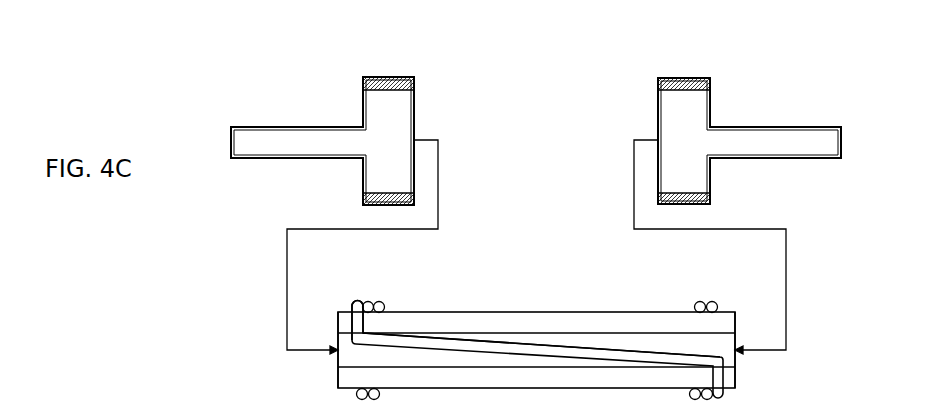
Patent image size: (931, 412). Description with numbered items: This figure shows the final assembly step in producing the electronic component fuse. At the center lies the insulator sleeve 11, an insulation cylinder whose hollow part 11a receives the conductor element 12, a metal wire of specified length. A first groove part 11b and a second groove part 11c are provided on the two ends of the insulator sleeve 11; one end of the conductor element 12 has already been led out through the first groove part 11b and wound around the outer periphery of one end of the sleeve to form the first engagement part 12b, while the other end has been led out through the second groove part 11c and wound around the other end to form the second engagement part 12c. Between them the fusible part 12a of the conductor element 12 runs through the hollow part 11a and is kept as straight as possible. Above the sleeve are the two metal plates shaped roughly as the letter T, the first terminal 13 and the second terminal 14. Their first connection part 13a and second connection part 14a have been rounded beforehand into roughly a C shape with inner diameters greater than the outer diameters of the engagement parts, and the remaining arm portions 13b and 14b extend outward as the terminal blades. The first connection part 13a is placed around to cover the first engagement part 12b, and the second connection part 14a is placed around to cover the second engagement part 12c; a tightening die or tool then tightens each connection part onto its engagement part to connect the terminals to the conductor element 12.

The insulator sleeve 11 is at (551, 325).
The hollow part 11a is at (506, 340).
The first groove part 11b is at (338, 322).
The second groove part 11c is at (728, 378).
The conductor element 12 is at (540, 326).
The fusible part 12a is at (560, 350).
The first engagement part 12b is at (366, 302).
The second engagement part 12c is at (706, 302).
The first terminal 13 is at (322, 115).
The first connection part 13a is at (367, 173).
The arm portion of first terminal 13b is at (302, 135).
The second terminal 14 is at (749, 115).
The second connection part 14a is at (703, 173).
The arm portion of second terminal 14b is at (770, 135).